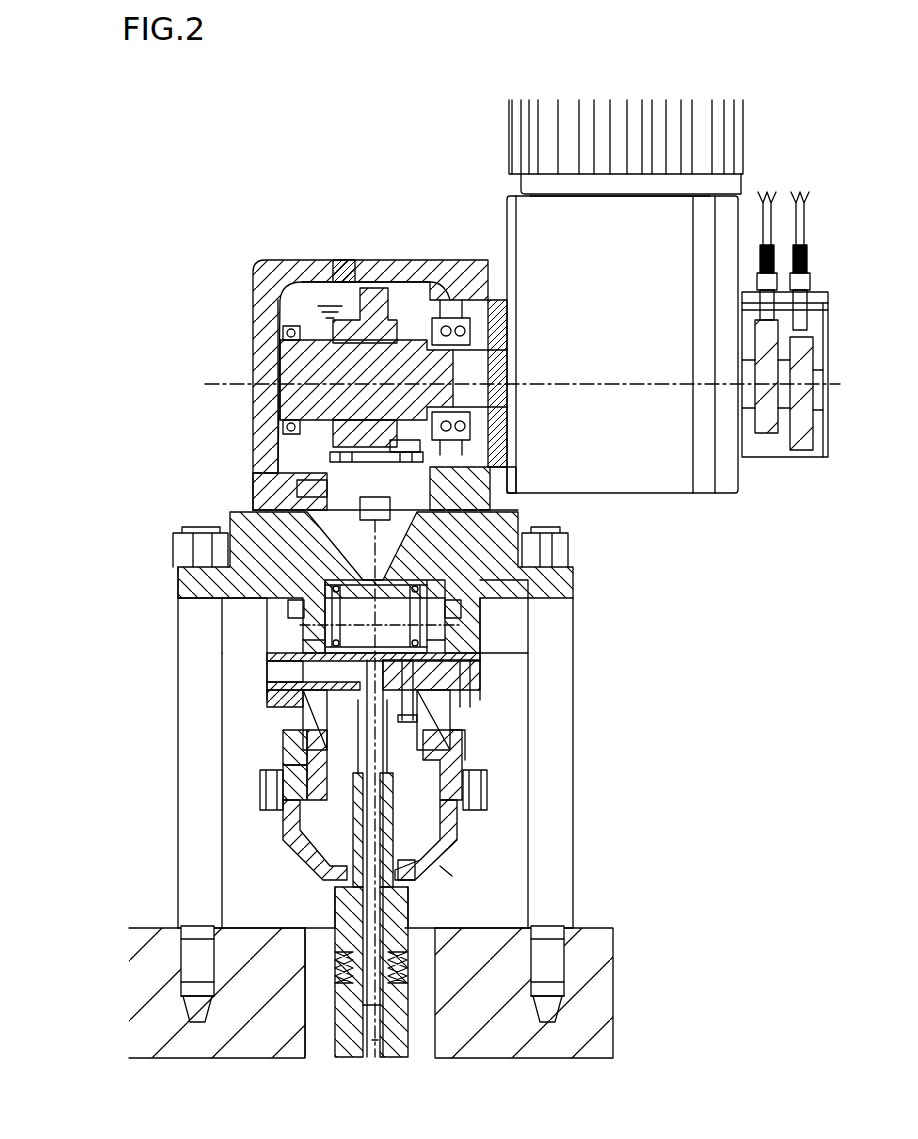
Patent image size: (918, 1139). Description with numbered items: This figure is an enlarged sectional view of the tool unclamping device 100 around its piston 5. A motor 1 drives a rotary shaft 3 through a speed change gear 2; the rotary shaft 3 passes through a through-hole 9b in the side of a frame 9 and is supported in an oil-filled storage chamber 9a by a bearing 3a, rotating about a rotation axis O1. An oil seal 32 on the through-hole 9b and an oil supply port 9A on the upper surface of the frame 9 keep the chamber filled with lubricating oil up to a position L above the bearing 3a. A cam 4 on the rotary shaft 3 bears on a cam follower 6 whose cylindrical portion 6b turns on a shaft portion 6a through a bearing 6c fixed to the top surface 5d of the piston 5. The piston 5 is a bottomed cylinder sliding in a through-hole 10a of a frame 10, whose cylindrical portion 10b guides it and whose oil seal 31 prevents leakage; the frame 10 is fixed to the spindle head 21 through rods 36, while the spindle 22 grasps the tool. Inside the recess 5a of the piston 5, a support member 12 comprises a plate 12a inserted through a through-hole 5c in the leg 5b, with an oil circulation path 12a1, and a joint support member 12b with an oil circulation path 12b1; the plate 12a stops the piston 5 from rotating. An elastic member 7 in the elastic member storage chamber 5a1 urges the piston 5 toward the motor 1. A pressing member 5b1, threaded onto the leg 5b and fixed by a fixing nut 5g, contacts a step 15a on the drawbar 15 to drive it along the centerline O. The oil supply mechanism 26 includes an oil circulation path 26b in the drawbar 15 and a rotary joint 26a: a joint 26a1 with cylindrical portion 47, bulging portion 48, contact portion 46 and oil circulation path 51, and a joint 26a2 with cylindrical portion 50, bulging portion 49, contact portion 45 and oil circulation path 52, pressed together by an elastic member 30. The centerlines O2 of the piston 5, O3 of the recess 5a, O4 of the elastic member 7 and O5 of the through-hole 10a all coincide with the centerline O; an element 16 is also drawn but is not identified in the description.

The tool unclamping device 100 is at (402, 110).
The motor 1 is at (531, 129).
The speed change gear 2 is at (649, 459).
The rotary shaft 3 is at (300, 401).
The bearing 3a is at (283, 335).
The cam 4 is at (376, 290).
The piston 5 is at (315, 520).
The recess 5a is at (462, 755).
The elastic member storage chamber 5a1 is at (265, 598).
The leg 5b is at (460, 778).
The pressing member 5b1 is at (300, 880).
The through-hole 5c is at (480, 630).
The top surface 5d is at (572, 553).
The fixing nut 5g is at (303, 717).
The cam follower 6 is at (253, 481).
The shaft portion 6a is at (253, 500).
The cylindrical portion 6b is at (330, 455).
The bearing 6c is at (480, 495).
The elastic member 7 is at (560, 590).
The frame 9 is at (253, 310).
The storage chamber 9a is at (317, 278).
The oil supply port 9A is at (347, 282).
The through-hole 9b is at (517, 392).
The frame 10 is at (185, 592).
The through-hole 10a is at (200, 565).
The cylindrical portion 10b is at (530, 607).
The support member 12 is at (471, 678).
The plate 12a is at (480, 657).
The oil circulation path 12a1 is at (300, 662).
The joint support member 12b is at (480, 686).
The oil circulation path 12b1 is at (300, 689).
The drawbar 15 is at (413, 886).
The step 15a is at (340, 898).
The thread 16 is at (410, 965).
The spindle head 21 is at (588, 991).
The spindle 22 is at (440, 928).
The oil supply mechanism 26 is at (612, 725).
The rotary joint 26a is at (167, 795).
The joint 26a1 is at (195, 795).
The joint 26a2 is at (185, 765).
The oil circulation path 26b is at (405, 1013).
The elastic member 30 is at (415, 738).
The oil seal 31 is at (300, 612).
The oil seal 32 is at (472, 318).
The rods 36 is at (549, 857).
The contact portion 45 is at (462, 786).
The contact portion 46 is at (487, 796).
The cylindrical portion 47 is at (262, 840).
The bulging portion 48 is at (300, 810).
The bulging portion 49 is at (285, 775).
The cylindrical portion 50 is at (285, 745).
The oil circulation path 51 is at (415, 868).
The oil circulation path 52 is at (455, 712).
The position L is at (410, 300).
The centerline O is at (375, 1033).
The rotation axis O1 is at (245, 384).
The centerline O2 is at (450, 572).
The centerline O3 is at (330, 641).
The centerline O4 is at (300, 624).
The centerline O5 is at (200, 544).